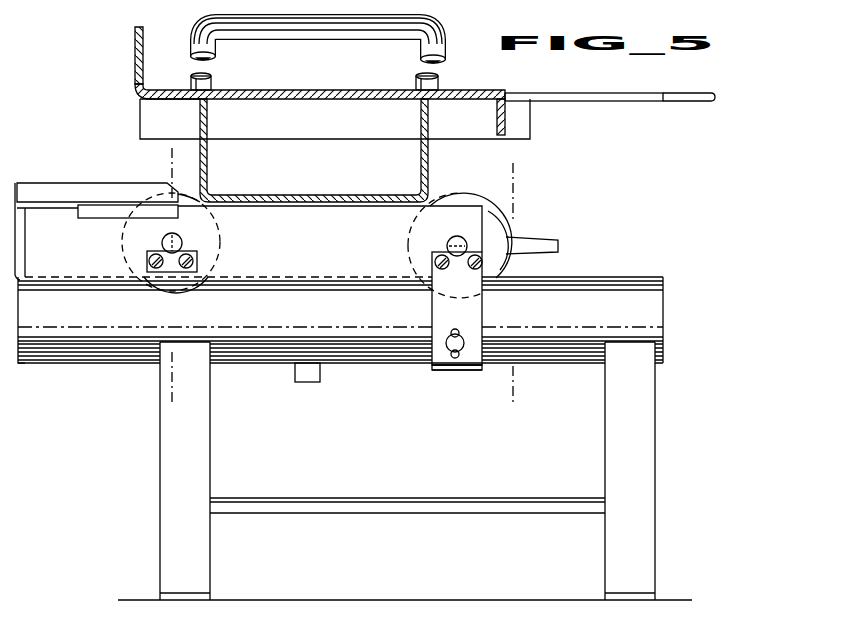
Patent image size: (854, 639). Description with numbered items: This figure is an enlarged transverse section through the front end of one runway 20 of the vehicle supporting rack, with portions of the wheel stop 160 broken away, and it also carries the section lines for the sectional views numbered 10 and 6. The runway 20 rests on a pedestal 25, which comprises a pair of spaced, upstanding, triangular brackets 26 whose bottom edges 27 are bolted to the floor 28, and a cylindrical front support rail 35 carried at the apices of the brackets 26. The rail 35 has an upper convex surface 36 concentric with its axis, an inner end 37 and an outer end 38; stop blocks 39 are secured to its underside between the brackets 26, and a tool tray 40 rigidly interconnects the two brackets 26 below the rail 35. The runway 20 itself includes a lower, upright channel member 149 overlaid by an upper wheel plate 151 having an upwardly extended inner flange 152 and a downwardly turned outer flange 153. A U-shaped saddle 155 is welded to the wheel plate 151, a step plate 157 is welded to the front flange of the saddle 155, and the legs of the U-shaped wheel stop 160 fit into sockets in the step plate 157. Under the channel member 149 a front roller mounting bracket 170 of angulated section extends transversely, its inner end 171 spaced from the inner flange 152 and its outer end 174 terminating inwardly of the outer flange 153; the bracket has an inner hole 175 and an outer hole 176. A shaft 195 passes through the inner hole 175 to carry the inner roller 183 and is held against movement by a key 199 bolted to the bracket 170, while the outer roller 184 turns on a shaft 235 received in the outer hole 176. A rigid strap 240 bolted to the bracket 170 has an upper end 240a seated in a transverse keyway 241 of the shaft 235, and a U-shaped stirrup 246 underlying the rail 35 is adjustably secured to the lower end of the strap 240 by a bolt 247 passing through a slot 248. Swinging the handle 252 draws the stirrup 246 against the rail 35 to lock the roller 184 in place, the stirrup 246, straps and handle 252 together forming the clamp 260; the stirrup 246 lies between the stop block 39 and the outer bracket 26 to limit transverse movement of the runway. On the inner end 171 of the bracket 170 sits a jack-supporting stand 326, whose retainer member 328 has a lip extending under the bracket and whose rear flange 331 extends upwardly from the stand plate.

The runway 20 is at (628, 95).
The pedestal 25 is at (622, 277).
The bracket 26 is at (170, 482).
The bottom edge 27 is at (195, 593).
The floor 28 is at (372, 600).
The front support rail 35 is at (290, 317).
The upper convex surface 36 is at (562, 278).
The inner end 37 is at (21, 322).
The outer end 38 is at (648, 313).
The stop block 39 is at (308, 382).
The tool tray 40 is at (365, 508).
The channel member 149 is at (208, 163).
The wheel plate 151 is at (248, 95).
The inner flange 152 is at (136, 57).
The outer flange 153 is at (497, 120).
The saddle 155 is at (292, 124).
The step plate 157 is at (552, 93).
The wheel stop 160 is at (362, 28).
The front roller mounting bracket 170 is at (282, 255).
The inner end 171 is at (33, 252).
The outer end 174 is at (452, 222).
The inner hole 175 is at (182, 236).
The outer hole 176 is at (448, 241).
The inner roller 183 is at (167, 285).
The outer roller 184 is at (492, 228).
The shaft 195 is at (162, 241).
The key 199 is at (176, 265).
The shaft 235 is at (447, 248).
The strap 240 is at (443, 324).
The upper end 240a is at (436, 258).
The keyway 241 is at (432, 294).
The stirrup 246 is at (456, 372).
The bolt 247 is at (464, 340).
The slot 248 is at (448, 353).
The handle 252 is at (536, 242).
The clamp 260 is at (470, 380).
The jack-supporting stand 326 is at (24, 183).
The retainer member 328 is at (80, 214).
The rear flange 331 is at (80, 190).
The section line 10- 10 is at (207, 161).
The section line 6- 6 is at (575, 183).